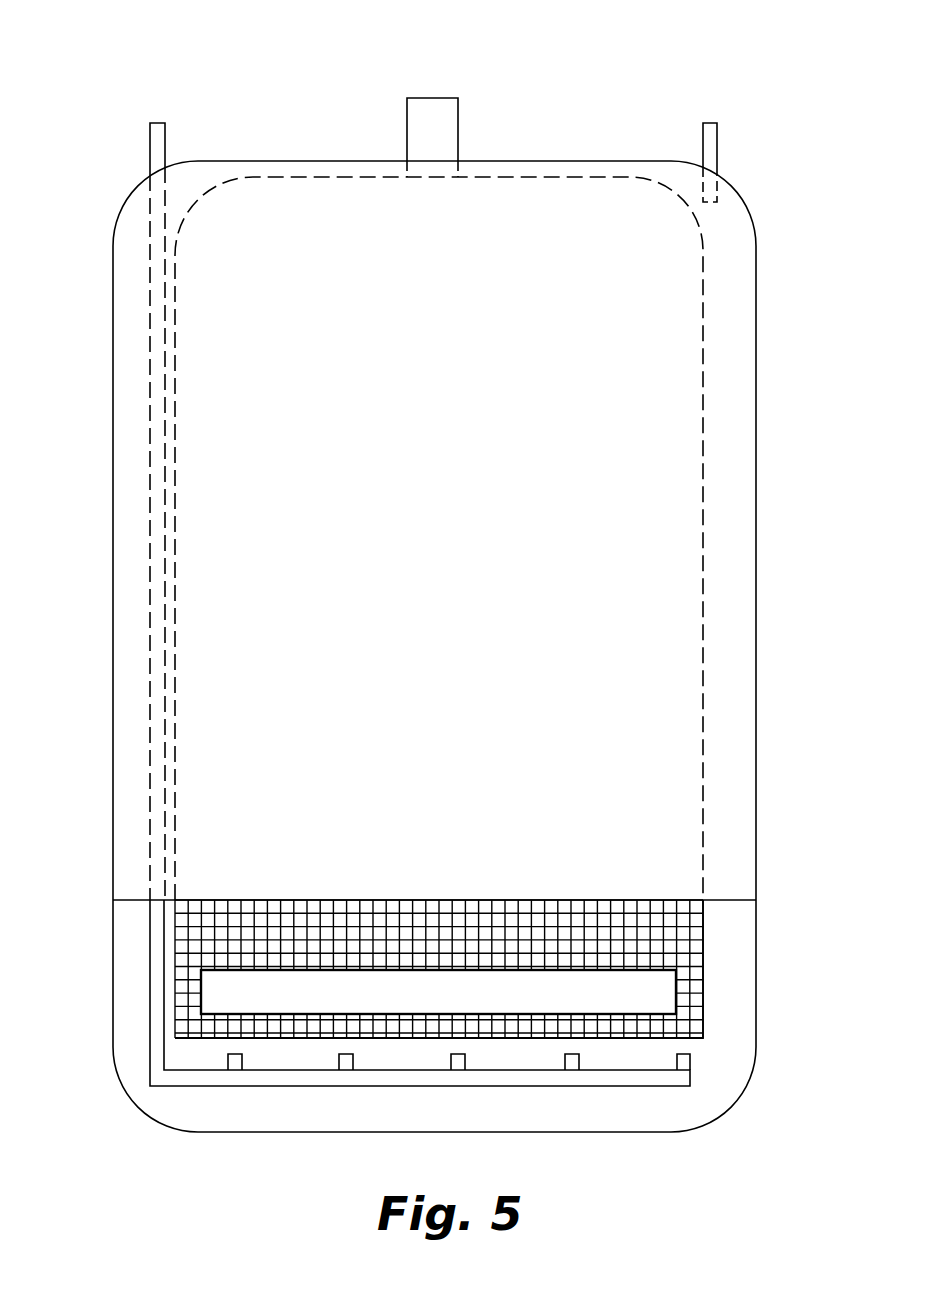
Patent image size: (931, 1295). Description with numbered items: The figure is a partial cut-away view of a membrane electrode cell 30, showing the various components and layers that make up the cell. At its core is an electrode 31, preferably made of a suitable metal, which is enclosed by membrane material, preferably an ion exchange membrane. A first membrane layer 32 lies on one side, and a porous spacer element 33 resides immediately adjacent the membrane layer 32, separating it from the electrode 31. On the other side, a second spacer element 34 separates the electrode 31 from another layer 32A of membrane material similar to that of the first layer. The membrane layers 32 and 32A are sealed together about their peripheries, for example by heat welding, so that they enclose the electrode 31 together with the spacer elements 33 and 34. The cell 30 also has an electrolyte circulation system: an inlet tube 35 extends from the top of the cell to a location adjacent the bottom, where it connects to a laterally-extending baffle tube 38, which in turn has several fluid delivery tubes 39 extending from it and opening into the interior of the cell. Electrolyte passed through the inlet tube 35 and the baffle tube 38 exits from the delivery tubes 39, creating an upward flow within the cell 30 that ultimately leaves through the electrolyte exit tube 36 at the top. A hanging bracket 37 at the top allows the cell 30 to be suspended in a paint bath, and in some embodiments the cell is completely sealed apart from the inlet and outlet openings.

The membrane electrode cell 30 is at (100, 80).
The electrode 31 is at (647, 992).
The first membrane layer 32 is at (195, 787).
The second membrane layer 32A is at (128, 1040).
The porous spacer element 33 is at (193, 934).
The second spacer element 34 is at (680, 1028).
The inlet tube 35 is at (165, 132).
The electrolyte exit tube 36 is at (717, 139).
The hanging bracket 37 is at (458, 110).
The baffle tube 38 is at (297, 1086).
The fluid delivery tubes 39 is at (227, 1062).